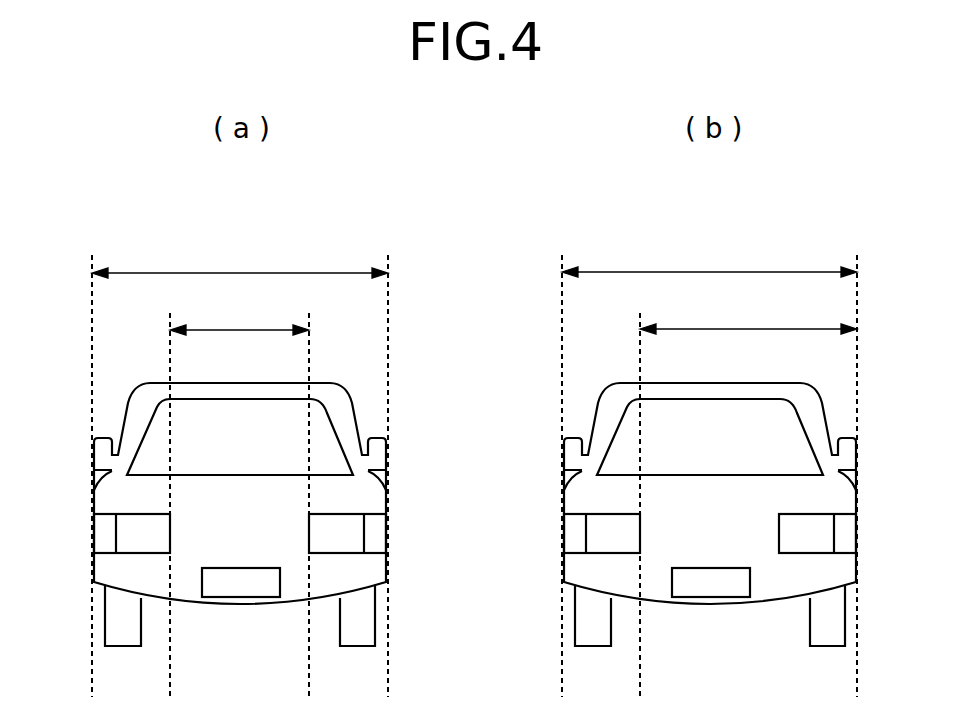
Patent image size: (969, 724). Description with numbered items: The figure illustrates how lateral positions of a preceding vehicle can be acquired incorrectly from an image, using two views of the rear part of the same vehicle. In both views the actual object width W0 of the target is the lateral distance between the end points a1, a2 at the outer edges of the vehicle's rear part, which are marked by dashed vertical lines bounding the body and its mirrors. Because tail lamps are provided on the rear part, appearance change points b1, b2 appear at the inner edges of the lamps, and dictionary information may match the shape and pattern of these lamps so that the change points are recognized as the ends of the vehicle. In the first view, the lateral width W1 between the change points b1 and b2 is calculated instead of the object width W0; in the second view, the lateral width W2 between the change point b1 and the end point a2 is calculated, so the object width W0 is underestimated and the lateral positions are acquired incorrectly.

The end point a1 is at (90, 535).
The end point a2 is at (390, 535).
The appearance change point b1 is at (172, 535).
The appearance change point b2 is at (307, 535).
The object width W0 is at (474, 260).
The lateral width W1 is at (239, 318).
The lateral width W2 is at (748, 317).